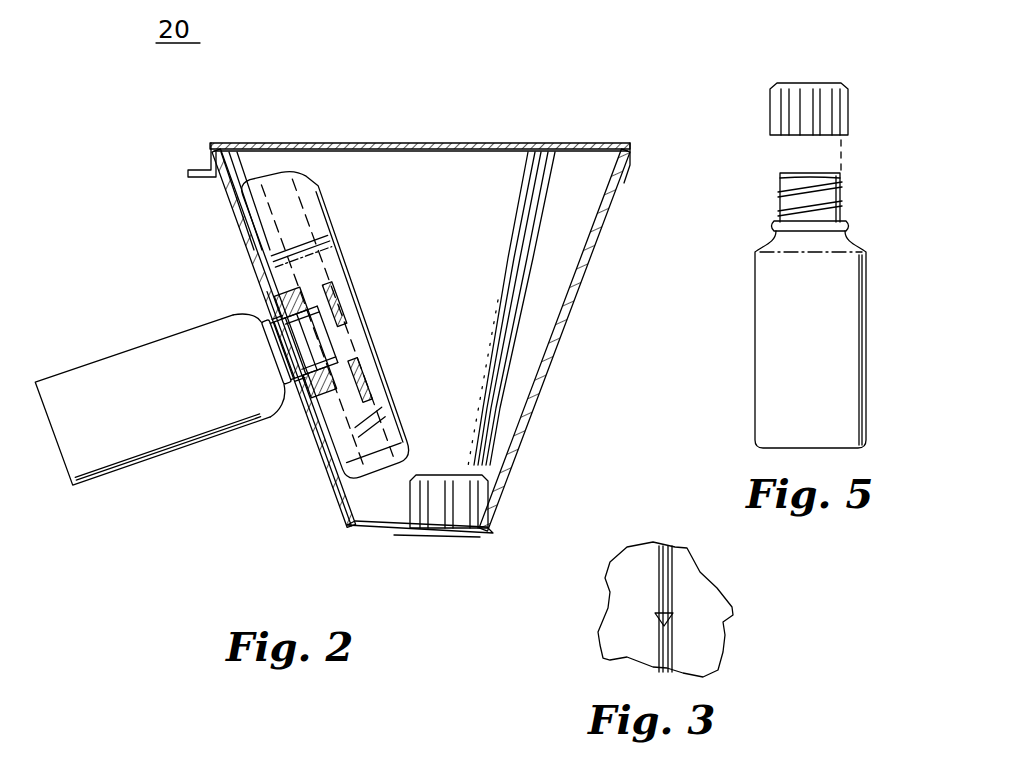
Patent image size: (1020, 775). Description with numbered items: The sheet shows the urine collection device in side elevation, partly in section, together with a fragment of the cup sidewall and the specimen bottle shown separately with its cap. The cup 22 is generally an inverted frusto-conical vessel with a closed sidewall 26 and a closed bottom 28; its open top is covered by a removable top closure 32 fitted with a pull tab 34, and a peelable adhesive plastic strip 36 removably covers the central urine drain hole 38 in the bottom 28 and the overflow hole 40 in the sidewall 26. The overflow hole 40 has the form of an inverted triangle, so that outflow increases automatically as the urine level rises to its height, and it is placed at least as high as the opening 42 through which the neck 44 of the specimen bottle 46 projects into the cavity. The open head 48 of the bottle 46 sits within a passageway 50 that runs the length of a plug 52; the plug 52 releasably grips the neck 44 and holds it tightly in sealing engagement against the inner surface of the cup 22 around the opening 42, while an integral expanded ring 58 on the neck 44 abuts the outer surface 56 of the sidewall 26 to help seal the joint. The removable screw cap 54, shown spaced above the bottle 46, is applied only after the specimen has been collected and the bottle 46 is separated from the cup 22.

In FIG. 2, the cup 22 is at (236, 236).
In FIG. 3, the cup 22 is at (724, 667).
In FIG. 2, the sidewall 26 is at (323, 460).
In FIG. 3, the sidewall 26 is at (720, 622).
In FIG. 2, the bottom 28 is at (374, 531).
In FIG. 2, the top closure 32 is at (495, 145).
In FIG. 2, the pull tab 34 is at (192, 168).
In FIG. 2, the peelable adhesive plastic strip 36 is at (524, 461).
In FIG. 2, the urine drain hole 38 is at (414, 536).
In FIG. 2, the overflow hole 40 is at (555, 350).
In FIG. 3, the overflow hole 40 is at (661, 613).
In FIG. 2, the opening 42 is at (268, 318).
In FIG. 2, the neck 44 is at (254, 292).
In FIG. 5, the neck 44 is at (838, 194).
In FIG. 2, the specimen bottle 46 is at (150, 333).
In FIG. 5, the specimen bottle 46 is at (746, 264).
In FIG. 2, the open head 48 is at (326, 322).
In FIG. 5, the open head 48 is at (798, 172).
In FIG. 2, the passageway 50 is at (263, 172).
In FIG. 2, the plug 52 is at (320, 176).
In FIG. 2, the screw cap 54 is at (446, 475).
In FIG. 5, the screw cap 54 is at (818, 82).
In FIG. 2, the outer surface 56 is at (300, 418).
In FIG. 2, the expanded ring 58 is at (272, 400).
In FIG. 5, the expanded ring 58 is at (780, 220).